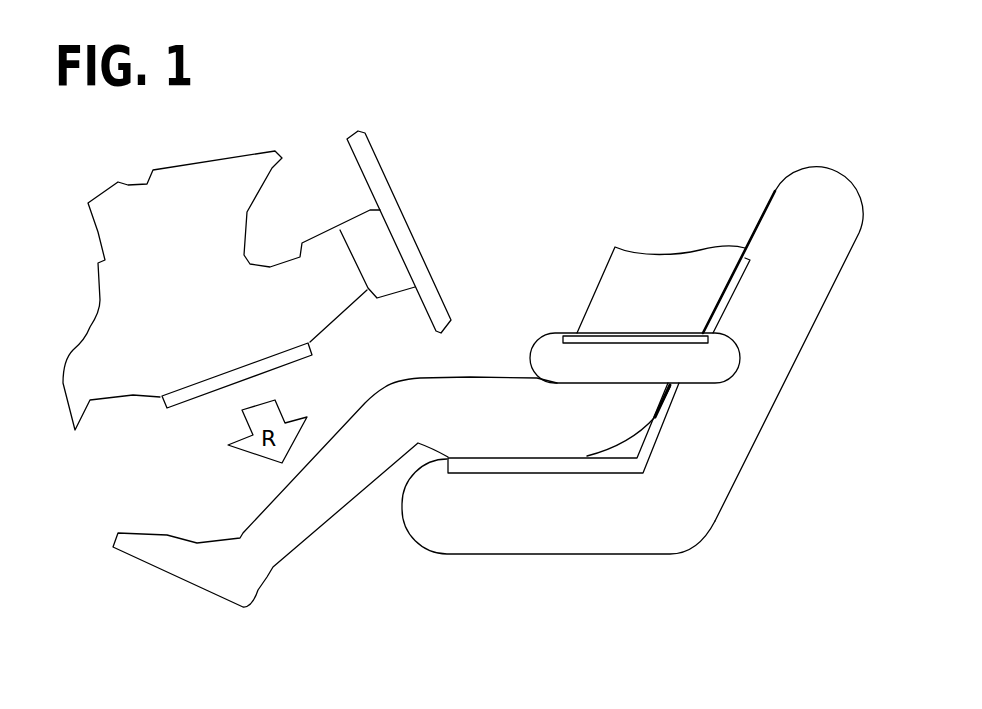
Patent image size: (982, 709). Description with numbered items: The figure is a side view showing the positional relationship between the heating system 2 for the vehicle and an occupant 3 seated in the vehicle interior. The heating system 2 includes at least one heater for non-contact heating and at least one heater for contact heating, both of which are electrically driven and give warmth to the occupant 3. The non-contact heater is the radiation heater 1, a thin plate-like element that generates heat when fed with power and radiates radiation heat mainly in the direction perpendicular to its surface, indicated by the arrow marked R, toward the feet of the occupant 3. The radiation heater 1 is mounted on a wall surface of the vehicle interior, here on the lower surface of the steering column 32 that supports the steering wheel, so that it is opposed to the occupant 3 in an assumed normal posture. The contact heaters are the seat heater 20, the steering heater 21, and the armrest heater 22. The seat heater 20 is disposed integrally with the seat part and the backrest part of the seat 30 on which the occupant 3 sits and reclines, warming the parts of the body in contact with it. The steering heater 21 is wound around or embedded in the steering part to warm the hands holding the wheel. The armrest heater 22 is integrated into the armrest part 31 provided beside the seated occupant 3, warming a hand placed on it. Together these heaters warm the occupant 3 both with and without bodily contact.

The radiation heater 1 is at (176, 409).
The heating system for the vehicle 2 is at (517, 207).
The occupant 3 is at (307, 542).
The seat heater 20 is at (675, 413).
The steering heater 21 is at (398, 202).
The armrest heater 22 is at (655, 332).
The seat 30 is at (463, 555).
The armrest part 31 is at (723, 352).
The steering column 32 is at (327, 327).